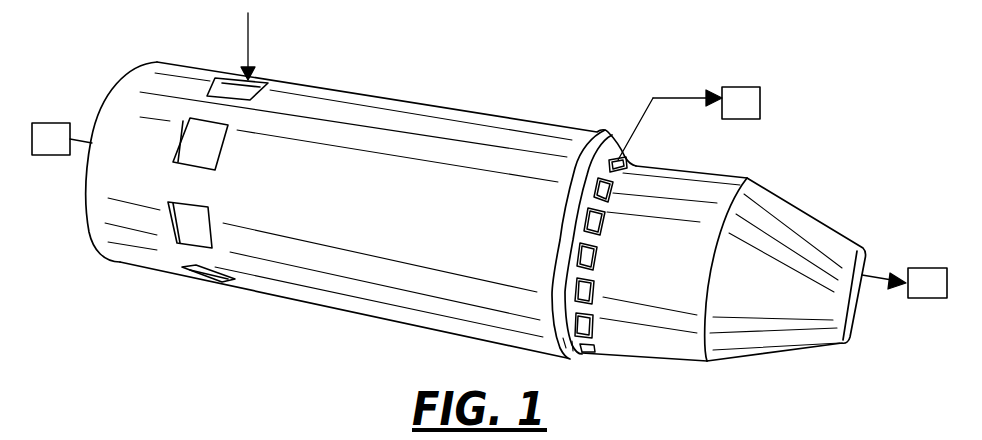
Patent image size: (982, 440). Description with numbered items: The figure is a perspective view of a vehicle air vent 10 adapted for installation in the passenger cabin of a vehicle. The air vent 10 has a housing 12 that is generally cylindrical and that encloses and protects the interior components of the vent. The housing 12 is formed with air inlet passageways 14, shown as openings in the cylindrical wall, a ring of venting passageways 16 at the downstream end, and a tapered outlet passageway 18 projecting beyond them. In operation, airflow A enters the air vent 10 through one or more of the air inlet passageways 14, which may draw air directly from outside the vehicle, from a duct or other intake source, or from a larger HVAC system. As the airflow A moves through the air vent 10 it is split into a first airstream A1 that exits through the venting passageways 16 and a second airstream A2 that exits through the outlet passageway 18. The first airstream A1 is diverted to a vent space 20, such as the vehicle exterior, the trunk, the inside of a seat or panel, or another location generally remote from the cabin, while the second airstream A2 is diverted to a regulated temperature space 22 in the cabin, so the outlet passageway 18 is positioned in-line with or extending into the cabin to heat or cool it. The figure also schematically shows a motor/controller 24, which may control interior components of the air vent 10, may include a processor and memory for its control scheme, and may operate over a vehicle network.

The vehicle air vent 10 is at (610, 66).
The housing 12 is at (388, 97).
The air inlet passageways 14 is at (199, 134).
The venting passageways 16 is at (600, 220).
The outlet passageway 18 is at (857, 307).
The vent space 20 is at (706, 103).
The regulated temperature space 22 is at (904, 283).
The motor/controller 24 is at (62, 139).
The airflow A is at (248, 43).
The first airstream A1 is at (682, 98).
The second airstream A2 is at (868, 273).